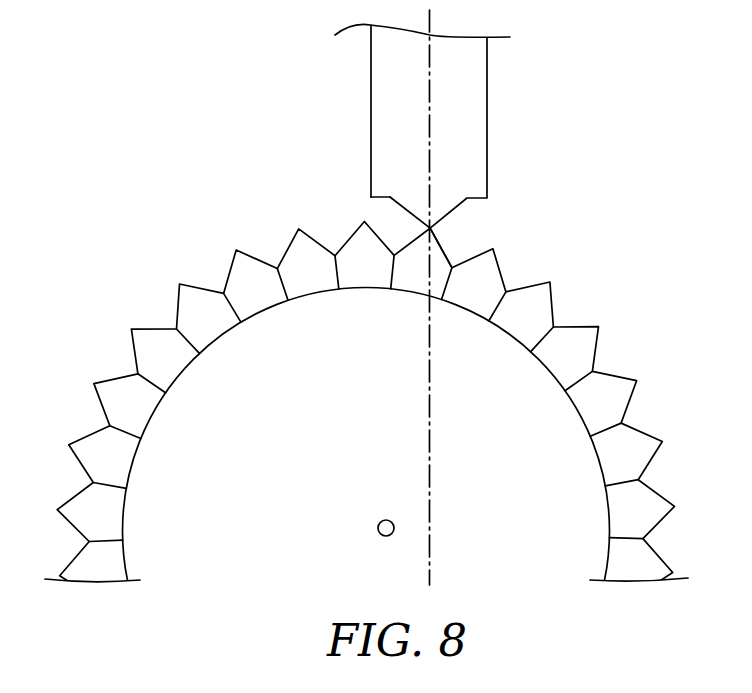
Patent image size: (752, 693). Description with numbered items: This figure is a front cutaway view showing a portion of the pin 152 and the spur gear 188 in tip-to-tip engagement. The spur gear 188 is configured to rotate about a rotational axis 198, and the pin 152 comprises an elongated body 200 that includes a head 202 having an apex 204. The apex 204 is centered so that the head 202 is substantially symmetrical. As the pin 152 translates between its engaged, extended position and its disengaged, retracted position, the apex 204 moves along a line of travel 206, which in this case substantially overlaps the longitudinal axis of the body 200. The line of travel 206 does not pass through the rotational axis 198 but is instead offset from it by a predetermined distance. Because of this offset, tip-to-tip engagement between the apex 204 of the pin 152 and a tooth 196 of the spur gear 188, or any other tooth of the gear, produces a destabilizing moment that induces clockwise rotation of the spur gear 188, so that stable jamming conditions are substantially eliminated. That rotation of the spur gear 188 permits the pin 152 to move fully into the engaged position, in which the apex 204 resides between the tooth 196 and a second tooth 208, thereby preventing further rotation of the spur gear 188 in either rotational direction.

The pin 152 is at (442, 126).
The spur gear 188 is at (366, 458).
The tooth 196 is at (438, 252).
The rotational axis 198 is at (378, 528).
The elongated body 200 is at (383, 77).
The head 202 is at (383, 186).
The apex 204 is at (418, 214).
The line of travel 206 is at (433, 413).
The second tooth 208 is at (369, 280).